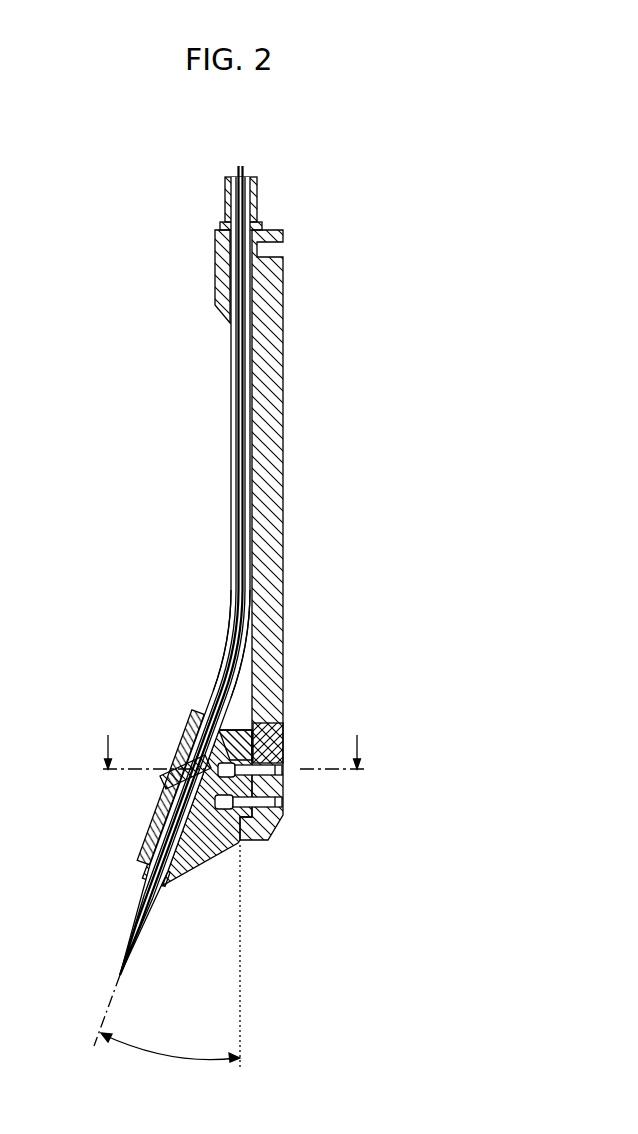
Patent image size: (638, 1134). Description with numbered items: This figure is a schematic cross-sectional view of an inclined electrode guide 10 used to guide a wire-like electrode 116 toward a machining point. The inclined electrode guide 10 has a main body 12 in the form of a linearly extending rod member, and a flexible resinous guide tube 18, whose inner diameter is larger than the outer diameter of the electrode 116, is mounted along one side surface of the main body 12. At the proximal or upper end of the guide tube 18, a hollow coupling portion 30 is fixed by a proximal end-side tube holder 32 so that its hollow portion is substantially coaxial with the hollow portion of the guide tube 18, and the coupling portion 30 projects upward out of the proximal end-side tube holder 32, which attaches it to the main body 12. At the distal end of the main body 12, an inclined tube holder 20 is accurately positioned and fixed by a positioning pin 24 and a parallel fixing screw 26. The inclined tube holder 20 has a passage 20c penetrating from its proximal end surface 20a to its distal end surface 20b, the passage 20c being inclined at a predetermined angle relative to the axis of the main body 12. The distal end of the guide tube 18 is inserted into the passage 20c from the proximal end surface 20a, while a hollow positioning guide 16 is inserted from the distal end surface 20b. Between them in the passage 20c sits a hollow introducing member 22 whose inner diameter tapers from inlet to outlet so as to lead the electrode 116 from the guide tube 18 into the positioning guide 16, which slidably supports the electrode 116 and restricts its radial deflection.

The inclined electrode guide 10 is at (382, 352).
The main body 12 is at (283, 546).
The positioning guide 16 is at (143, 938).
The guide tube 18 is at (232, 520).
The inclined tube holder 20 is at (232, 858).
The proximal end surface 20a is at (236, 730).
The distal end surface 20b is at (176, 884).
The passage 20c is at (205, 712).
The introducing member 22 is at (163, 782).
The positioning pin 24 is at (283, 725).
The fixing screw 26 is at (275, 832).
The coupling portion 30 is at (257, 200).
The proximal end-side tube holder 32 is at (215, 264).
The electrode 116 is at (240, 602).